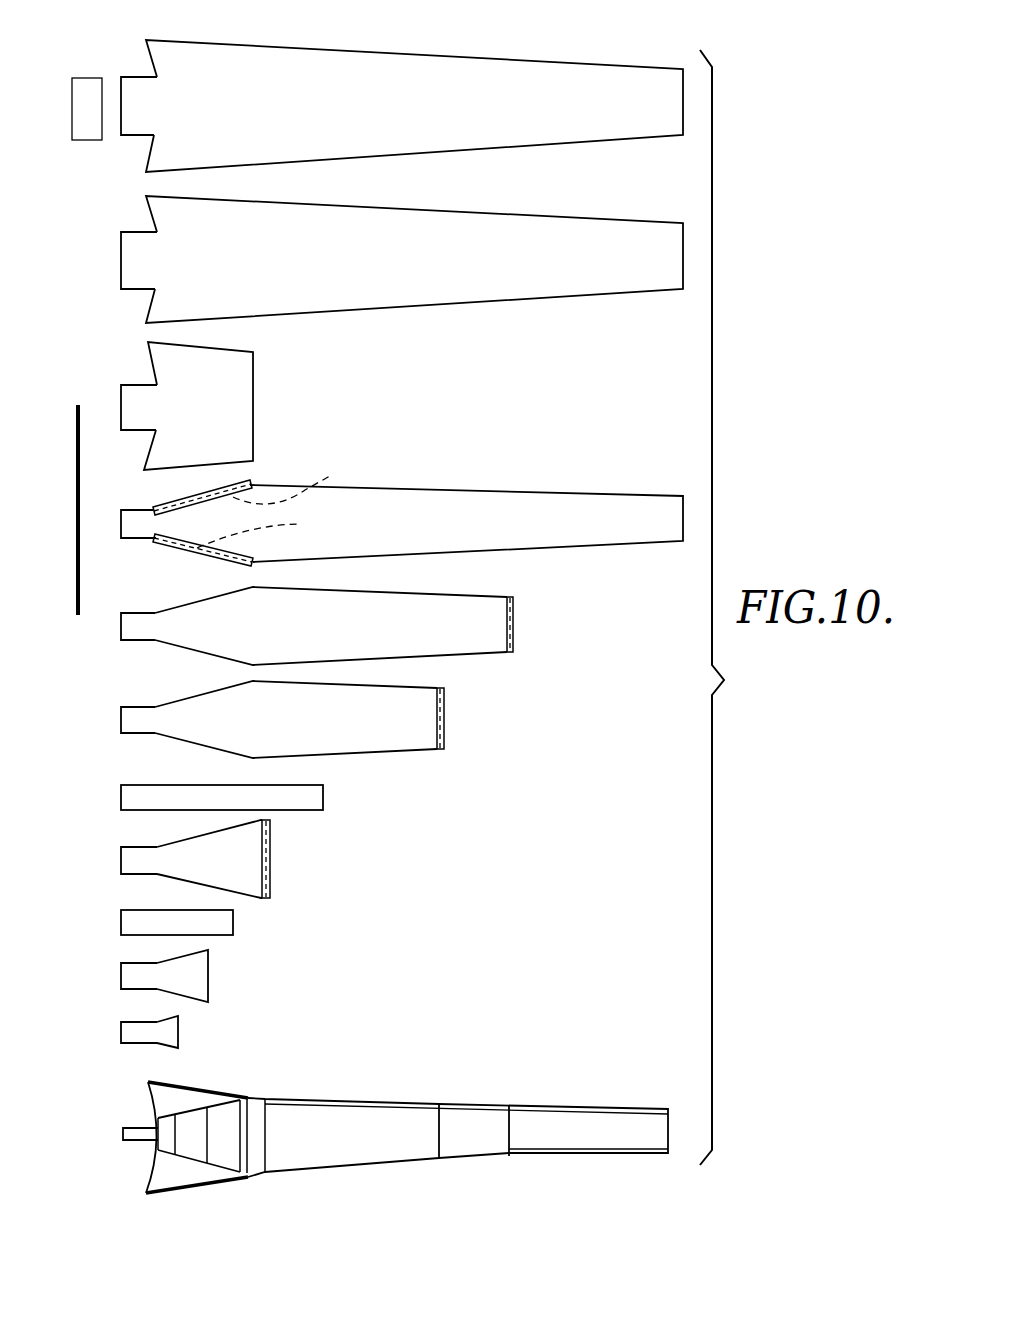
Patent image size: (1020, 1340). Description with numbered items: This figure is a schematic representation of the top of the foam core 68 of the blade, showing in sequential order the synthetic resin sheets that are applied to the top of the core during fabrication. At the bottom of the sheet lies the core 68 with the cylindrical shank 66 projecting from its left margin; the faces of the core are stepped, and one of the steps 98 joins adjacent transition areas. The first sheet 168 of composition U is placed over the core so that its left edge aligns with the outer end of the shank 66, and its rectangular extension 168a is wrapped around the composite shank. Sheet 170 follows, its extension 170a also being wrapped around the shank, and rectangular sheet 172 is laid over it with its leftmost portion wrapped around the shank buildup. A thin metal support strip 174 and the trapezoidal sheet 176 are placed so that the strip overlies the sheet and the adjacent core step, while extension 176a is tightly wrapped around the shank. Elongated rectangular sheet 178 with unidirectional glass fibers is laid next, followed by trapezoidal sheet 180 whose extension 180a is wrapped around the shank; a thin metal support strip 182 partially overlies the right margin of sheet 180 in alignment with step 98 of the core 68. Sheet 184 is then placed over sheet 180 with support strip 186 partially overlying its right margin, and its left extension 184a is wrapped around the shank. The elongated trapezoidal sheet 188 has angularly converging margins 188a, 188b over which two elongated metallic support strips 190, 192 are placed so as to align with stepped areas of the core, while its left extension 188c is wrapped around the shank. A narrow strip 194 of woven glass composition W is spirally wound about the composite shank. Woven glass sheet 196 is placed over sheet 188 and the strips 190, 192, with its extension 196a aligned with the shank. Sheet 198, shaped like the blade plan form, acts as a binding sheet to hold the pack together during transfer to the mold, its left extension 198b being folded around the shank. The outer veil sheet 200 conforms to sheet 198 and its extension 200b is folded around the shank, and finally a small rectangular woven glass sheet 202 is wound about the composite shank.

The shank 66 is at (132, 1137).
The core 68 is at (372, 1106).
The step 98 is at (440, 1133).
The sheet 168 is at (165, 1027).
The extension 168a is at (138, 1028).
The sheet 170 is at (197, 982).
The extension 170a is at (138, 973).
The rectangular sheet 172 is at (218, 920).
The support strip 174 is at (273, 857).
The trapezoidal sheet 176 is at (238, 872).
The extension 176a is at (138, 858).
The rectangular sheet 178 is at (140, 796).
The trapezoidal sheet 180 is at (348, 732).
The extension 180a is at (147, 716).
The support strip 182 is at (445, 718).
The sheet 184 is at (457, 640).
The extension 184a is at (137, 628).
The support strip 186 is at (515, 620).
The sheet 188 is at (540, 512).
The converging margin 188a is at (304, 475).
The converging margin 188b is at (276, 532).
The extension 188c is at (133, 523).
The support strip 190 is at (187, 498).
The support strip 192 is at (227, 560).
The strip 194 is at (77, 590).
The sheet 196 is at (242, 400).
The extension 196a is at (120, 406).
The sheet 198 is at (490, 288).
The extension 198b is at (138, 257).
The veil sheet 200 is at (463, 75).
The extension 200b is at (142, 110).
The sheet 202 is at (96, 88).